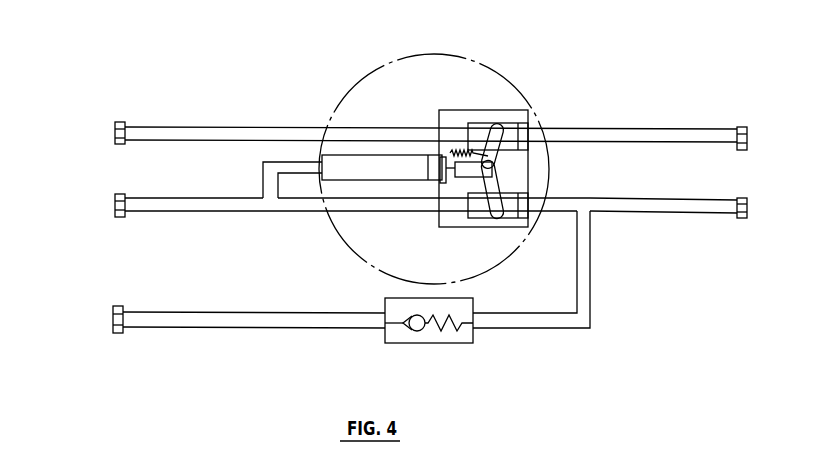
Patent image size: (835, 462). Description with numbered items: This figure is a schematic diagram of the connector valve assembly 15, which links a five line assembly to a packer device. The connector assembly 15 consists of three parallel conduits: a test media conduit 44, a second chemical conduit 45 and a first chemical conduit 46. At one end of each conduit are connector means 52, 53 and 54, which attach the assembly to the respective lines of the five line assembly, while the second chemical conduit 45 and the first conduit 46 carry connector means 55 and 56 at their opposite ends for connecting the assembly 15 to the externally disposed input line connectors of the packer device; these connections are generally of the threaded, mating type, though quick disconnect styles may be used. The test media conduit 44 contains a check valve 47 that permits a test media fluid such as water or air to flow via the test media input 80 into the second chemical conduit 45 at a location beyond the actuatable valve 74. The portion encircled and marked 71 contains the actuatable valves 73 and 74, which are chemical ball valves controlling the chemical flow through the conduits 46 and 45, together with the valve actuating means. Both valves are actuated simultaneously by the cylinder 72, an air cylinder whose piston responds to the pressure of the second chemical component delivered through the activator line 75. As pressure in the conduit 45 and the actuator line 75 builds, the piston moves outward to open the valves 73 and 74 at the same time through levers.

The connector valve assembly 15 is at (638, 214).
The test media conduit 44 is at (240, 320).
The second chemical conduit 45 is at (290, 206).
The first chemical conduit 46 is at (287, 128).
The check valve 47 is at (377, 338).
The connector means 52 is at (113, 318).
The connector means 53 is at (114, 204).
The connector means 54 is at (114, 132).
The connector means 55 is at (747, 210).
The connector means 56 is at (747, 137).
The encircled portion 71 is at (476, 55).
The cylinder 72 is at (385, 165).
The actuatable valve 73 is at (512, 133).
The actuatable valve 74 is at (497, 200).
The activator line 75 is at (262, 171).
The test media input 80 is at (590, 292).